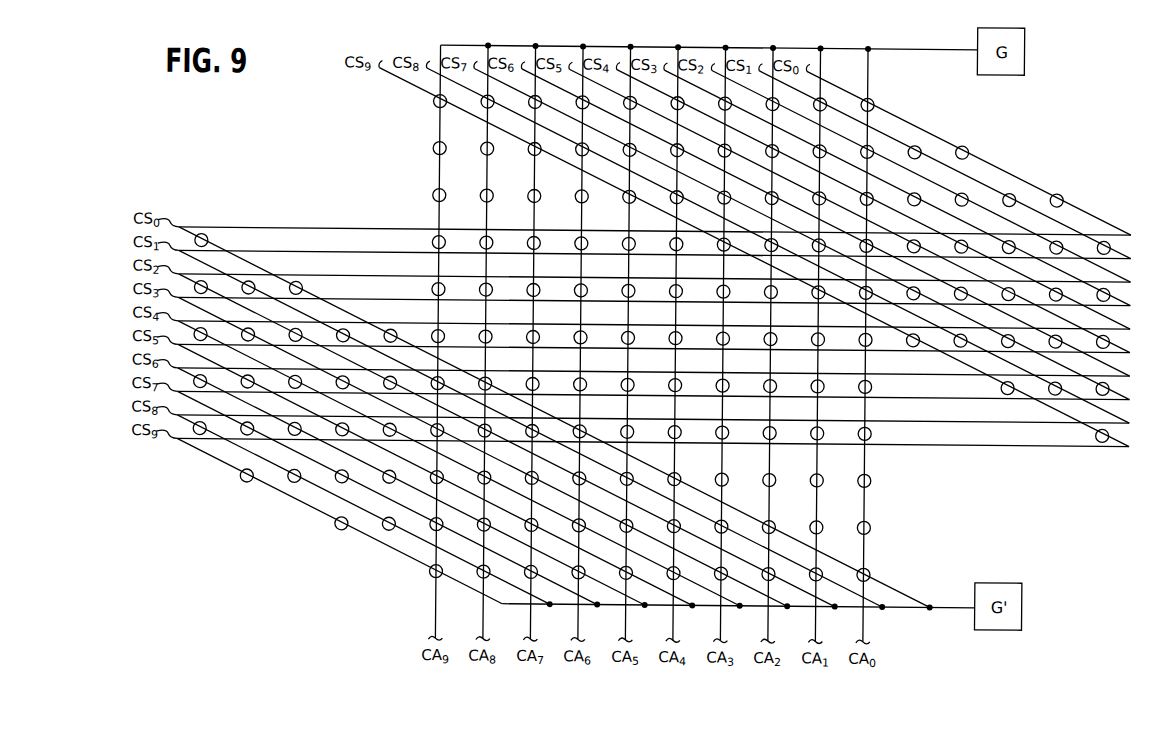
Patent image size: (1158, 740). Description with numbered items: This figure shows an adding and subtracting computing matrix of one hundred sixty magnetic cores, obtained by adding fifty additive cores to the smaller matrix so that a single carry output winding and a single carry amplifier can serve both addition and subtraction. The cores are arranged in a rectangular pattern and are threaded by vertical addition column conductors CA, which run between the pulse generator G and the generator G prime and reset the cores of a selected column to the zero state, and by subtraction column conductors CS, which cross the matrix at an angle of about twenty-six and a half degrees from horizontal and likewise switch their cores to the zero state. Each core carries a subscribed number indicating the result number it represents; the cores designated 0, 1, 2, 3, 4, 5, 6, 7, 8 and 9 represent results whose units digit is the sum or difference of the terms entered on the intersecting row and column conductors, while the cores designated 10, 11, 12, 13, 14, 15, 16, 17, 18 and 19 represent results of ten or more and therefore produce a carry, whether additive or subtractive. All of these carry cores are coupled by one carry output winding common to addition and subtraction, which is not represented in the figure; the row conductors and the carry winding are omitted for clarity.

The core designated 0 is at (657, 313).
The core designated 1 is at (657, 290).
The core designated 2 is at (942, 269).
The core designated 3 is at (871, 245).
The core designated 4 is at (800, 220).
The core designated 5 is at (752, 220).
The core designated 6 is at (729, 243).
The core designated 7 is at (705, 267).
The core designated 8 is at (681, 291).
The core designated 9 is at (657, 313).
The core designated 10 is at (660, 360).
The core designated 11 is at (636, 384).
The core designated 12 is at (612, 407).
The core designated 13 is at (588, 430).
The core designated 14 is at (564, 453).
The core designated 15 is at (517, 453).
The core designated 16 is at (446, 429).
The core designated 17 is at (375, 405).
The core designated 18 is at (660, 384).
The core designated 19 is at (660, 360).